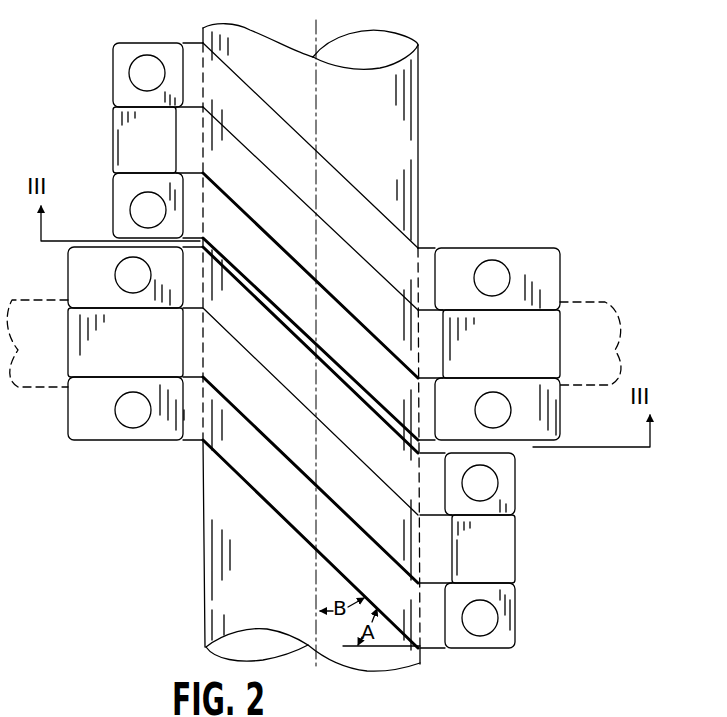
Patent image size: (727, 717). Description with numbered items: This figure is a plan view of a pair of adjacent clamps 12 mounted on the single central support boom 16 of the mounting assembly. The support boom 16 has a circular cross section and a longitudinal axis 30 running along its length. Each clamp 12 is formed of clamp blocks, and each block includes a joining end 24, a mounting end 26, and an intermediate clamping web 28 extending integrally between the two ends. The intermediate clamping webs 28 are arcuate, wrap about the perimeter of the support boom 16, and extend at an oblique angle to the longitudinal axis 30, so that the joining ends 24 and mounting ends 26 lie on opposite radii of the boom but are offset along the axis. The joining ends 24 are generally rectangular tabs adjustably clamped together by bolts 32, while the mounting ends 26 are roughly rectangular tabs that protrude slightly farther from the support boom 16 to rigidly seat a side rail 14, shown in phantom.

The clamp 12 is at (428, 237).
The side rail 14 is at (578, 297).
The support boom 16 is at (343, 345).
The joining end 24 is at (120, 77).
The mounting end 26 is at (534, 263).
The intermediate clamping web 28 is at (370, 213).
The longitudinal axis 30 is at (308, 55).
The bolt 32 is at (156, 68).